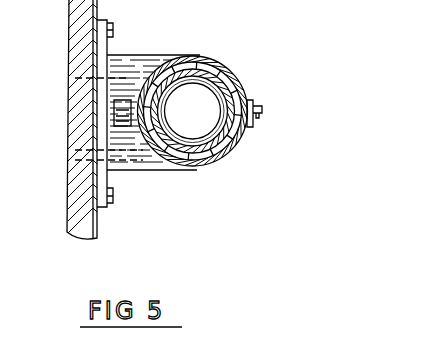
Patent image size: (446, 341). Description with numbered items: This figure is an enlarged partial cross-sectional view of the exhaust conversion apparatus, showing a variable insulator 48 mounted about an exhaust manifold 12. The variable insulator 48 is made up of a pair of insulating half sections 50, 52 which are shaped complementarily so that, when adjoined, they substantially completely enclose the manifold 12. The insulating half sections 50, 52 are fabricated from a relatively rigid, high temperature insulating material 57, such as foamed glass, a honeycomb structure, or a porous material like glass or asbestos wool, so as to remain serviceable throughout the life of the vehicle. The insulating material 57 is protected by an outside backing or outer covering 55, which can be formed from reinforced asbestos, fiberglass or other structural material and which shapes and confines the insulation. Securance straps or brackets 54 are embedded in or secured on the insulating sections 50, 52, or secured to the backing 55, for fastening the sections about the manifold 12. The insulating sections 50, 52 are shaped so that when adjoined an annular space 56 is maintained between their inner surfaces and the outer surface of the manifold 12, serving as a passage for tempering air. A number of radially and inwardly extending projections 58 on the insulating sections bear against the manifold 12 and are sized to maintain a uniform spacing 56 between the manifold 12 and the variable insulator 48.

The exhaust manifold 12 is at (232, 85).
The variable insulator 48 is at (205, 57).
The insulating half section 50 is at (243, 92).
The insulating half section 52 is at (208, 158).
The securance strap or bracket 54 is at (124, 103).
The outer covering 55 is at (243, 150).
The annular space 56 is at (215, 80).
The insulating material 57 is at (240, 140).
The radially and inwardly extending projection 58 is at (200, 159).